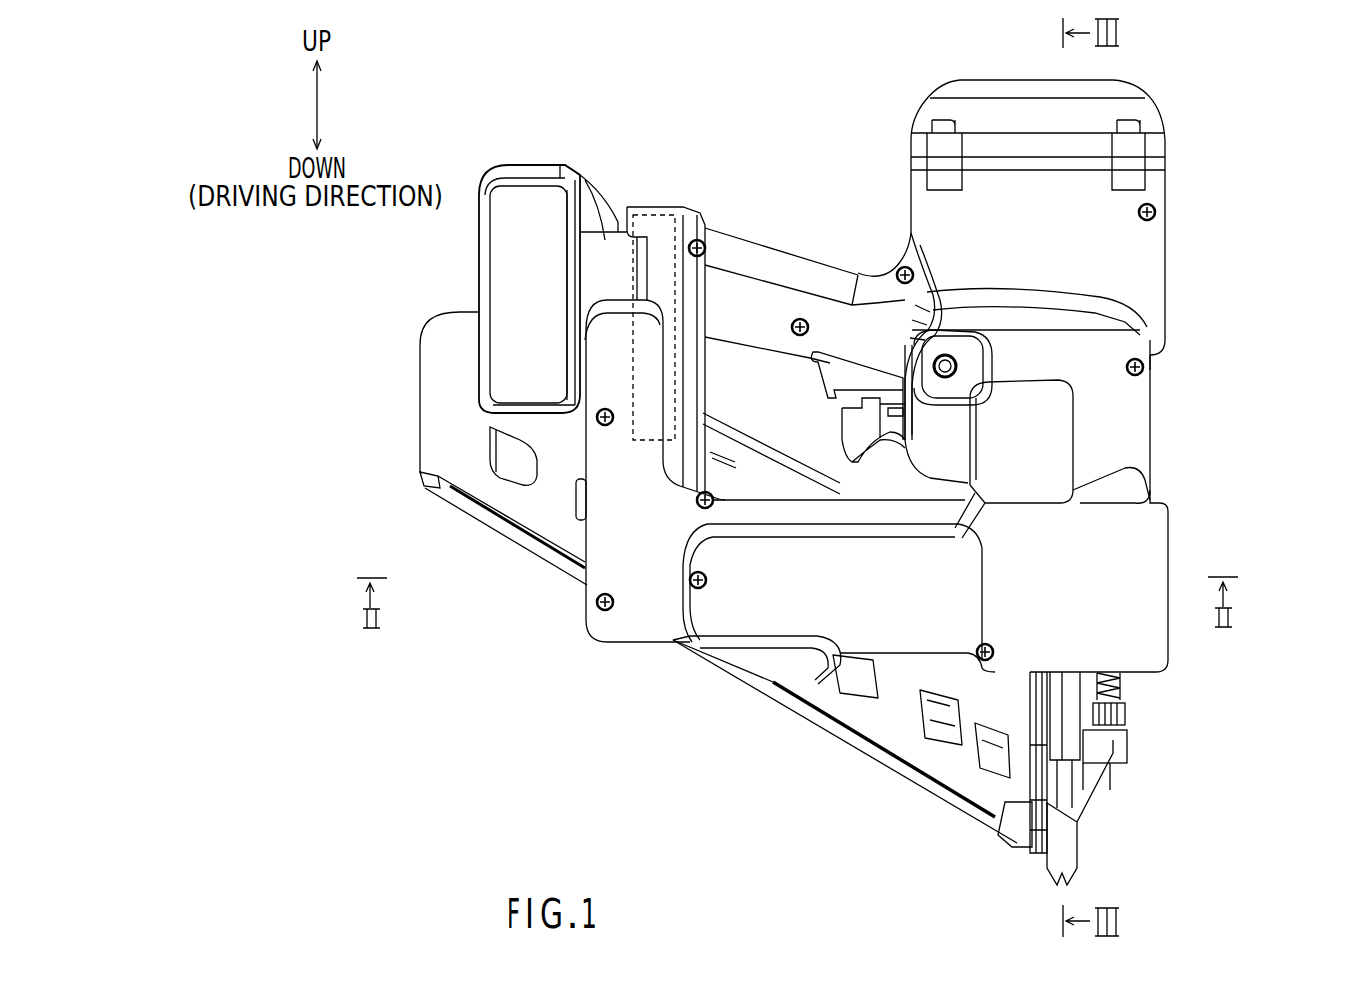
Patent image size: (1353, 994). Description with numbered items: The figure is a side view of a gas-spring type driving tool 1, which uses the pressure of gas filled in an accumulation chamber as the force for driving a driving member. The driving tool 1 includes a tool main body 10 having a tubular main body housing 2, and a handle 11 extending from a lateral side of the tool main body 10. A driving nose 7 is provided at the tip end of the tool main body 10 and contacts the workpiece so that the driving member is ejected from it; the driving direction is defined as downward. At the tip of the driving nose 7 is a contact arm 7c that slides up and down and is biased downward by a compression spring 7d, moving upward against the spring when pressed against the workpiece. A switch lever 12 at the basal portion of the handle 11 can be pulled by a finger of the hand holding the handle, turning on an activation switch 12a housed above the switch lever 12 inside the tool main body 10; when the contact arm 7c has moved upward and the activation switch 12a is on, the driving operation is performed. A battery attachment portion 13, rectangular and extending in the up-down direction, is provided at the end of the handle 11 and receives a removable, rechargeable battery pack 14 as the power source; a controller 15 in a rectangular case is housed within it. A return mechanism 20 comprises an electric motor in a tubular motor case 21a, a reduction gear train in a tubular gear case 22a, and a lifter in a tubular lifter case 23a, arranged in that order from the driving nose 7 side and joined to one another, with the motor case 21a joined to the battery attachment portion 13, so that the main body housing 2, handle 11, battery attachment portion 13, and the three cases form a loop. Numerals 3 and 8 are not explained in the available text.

The driving tool 1 is at (1250, 61).
The tool main body 10 is at (1220, 140).
The main body housing 2 is at (1188, 270).
The housing body 3 is at (1205, 340).
The driving nose 7 is at (1152, 802).
The contact arm 7c is at (1082, 855).
The compression spring 7d is at (1130, 686).
The magazine 8 is at (906, 787).
The handle 11 is at (791, 247).
The switch lever 12 is at (840, 433).
The activation switch 12a is at (858, 332).
The battery attachment portion 13 is at (625, 205).
The battery pack 14 is at (540, 165).
The controller 15 is at (661, 210).
The return mechanism 20 is at (764, 750).
The motor case 21a is at (730, 618).
The gear case 22a is at (905, 635).
The lifter case 23a is at (1018, 652).